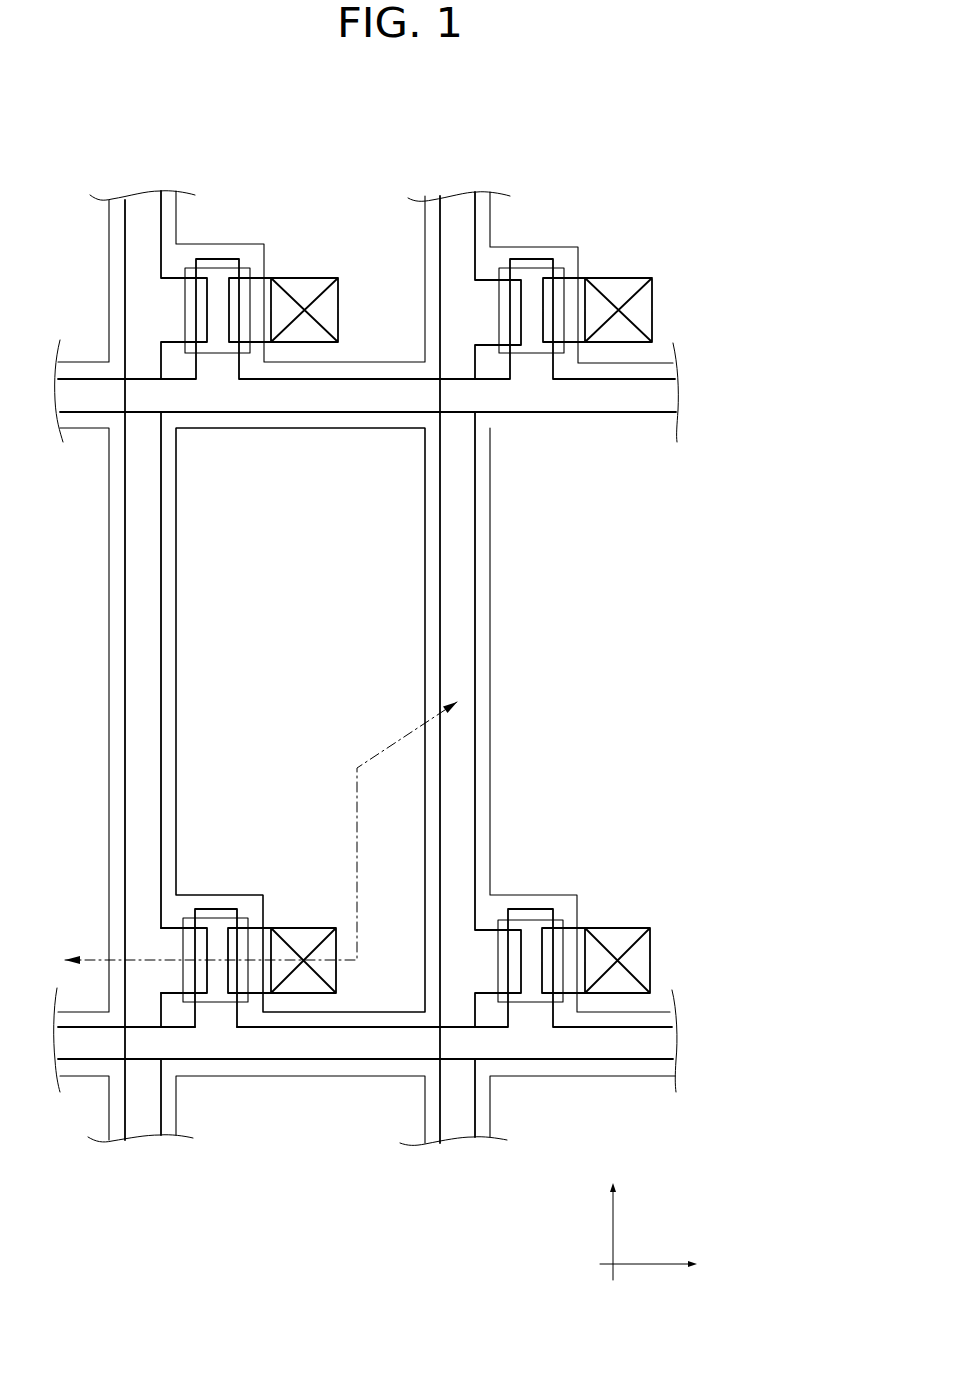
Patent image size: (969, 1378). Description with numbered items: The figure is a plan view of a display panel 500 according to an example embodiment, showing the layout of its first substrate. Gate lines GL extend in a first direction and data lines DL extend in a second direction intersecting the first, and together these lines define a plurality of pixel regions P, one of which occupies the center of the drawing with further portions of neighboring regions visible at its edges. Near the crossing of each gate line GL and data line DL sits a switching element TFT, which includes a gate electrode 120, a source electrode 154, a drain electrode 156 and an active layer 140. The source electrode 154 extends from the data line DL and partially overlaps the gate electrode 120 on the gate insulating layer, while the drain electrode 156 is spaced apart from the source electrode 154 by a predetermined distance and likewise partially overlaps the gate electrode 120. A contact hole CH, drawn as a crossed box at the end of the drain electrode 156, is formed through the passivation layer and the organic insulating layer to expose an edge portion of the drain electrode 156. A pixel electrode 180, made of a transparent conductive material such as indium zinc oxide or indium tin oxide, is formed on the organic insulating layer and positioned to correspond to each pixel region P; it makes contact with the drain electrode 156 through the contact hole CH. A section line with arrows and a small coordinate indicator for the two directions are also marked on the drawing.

The display panel 500 is at (398, 105).
The data line DL is at (463, 517).
The gate line GL is at (386, 1040).
The pixel electrode 180 is at (425, 605).
The pixel region P is at (323, 537).
The switching element TFT is at (269, 1090).
The source electrode 154 is at (177, 985).
The gate electrode 120 is at (207, 1015).
The active layer 140 is at (218, 993).
The drain electrode 156 is at (255, 983).
The contact hole CH is at (303, 985).